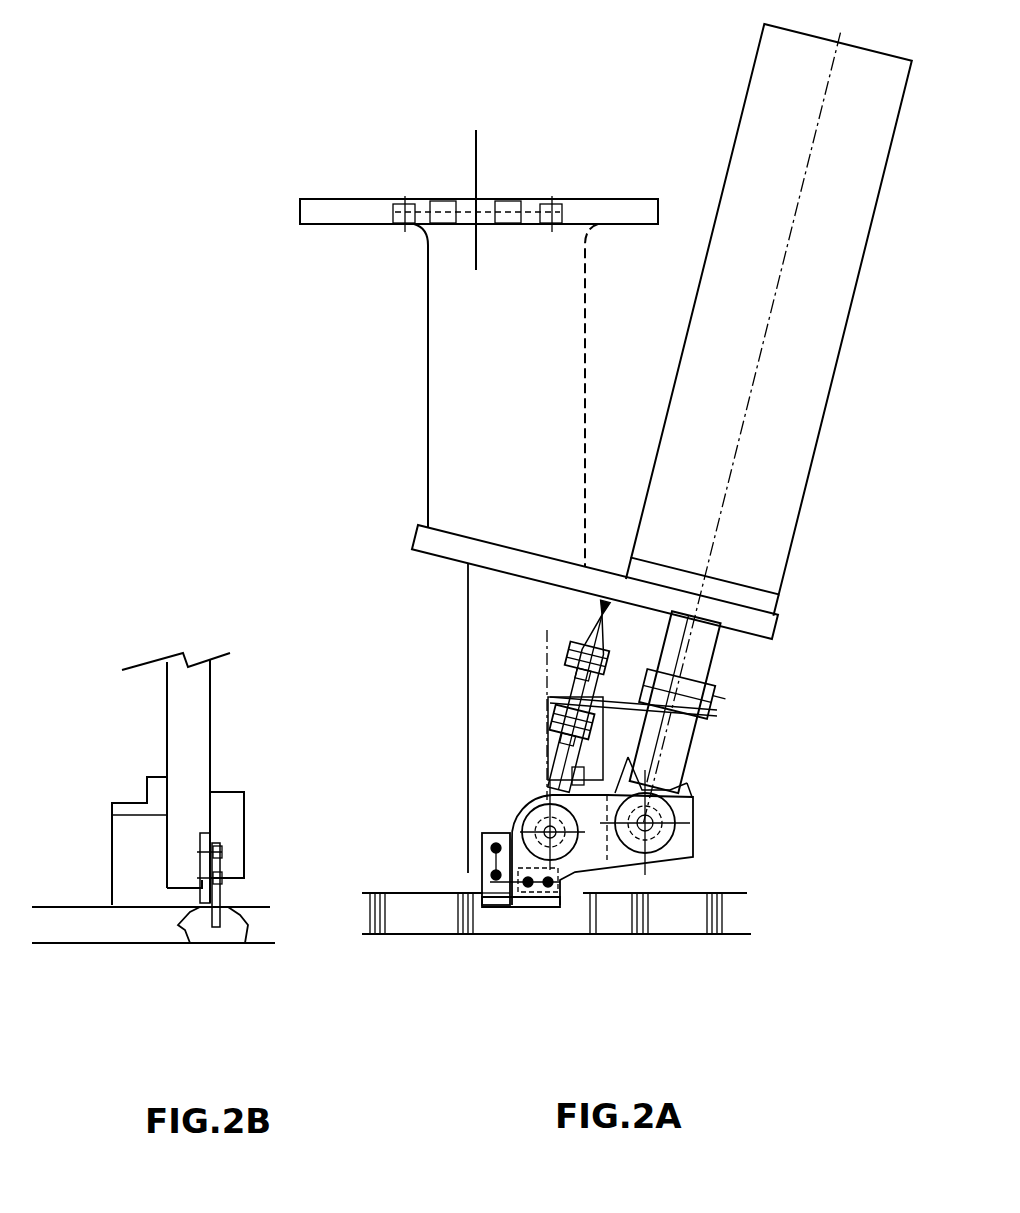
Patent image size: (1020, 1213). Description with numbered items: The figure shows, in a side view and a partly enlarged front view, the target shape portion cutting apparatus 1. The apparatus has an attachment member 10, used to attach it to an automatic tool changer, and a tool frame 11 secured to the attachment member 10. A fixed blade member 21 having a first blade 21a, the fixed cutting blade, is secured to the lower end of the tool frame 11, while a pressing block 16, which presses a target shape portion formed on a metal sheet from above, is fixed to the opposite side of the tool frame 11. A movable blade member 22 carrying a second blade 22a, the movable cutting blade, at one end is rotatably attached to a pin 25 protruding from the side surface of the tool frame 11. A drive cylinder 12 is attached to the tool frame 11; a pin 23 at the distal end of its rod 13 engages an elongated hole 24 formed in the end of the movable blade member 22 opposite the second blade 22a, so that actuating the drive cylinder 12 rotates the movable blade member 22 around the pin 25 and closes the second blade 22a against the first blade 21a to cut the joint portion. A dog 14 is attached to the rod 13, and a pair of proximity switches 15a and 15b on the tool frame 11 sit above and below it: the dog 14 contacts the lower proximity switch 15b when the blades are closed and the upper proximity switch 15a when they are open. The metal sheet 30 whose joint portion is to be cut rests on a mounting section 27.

In FIG. 2A, the target shape portion cutting apparatus 1 is at (370, 493).
In FIG. 2A, the attachment member 10 is at (366, 198).
In FIG. 2A, the tool frame 11 is at (427, 405).
In FIG. 2A, the drive cylinder 12 is at (802, 515).
In FIG. 2A, the rod 13 is at (705, 663).
In FIG. 2A, the dog 14 is at (620, 692).
In FIG. 2A, the upper proximity switch 15a is at (565, 668).
In FIG. 2A, the lower proximity switch 15b is at (553, 708).
In FIG. 2B, the pressing block 16 is at (112, 835).
In FIG. 2A, the fixed blade member 21 is at (482, 890).
In FIG. 2B, the fixed blade member 21 is at (215, 830).
In FIG. 2B, the first blade 21a is at (190, 935).
In FIG. 2A, the movable blade member 22 is at (517, 907).
In FIG. 2B, the movable blade member 22 is at (215, 930).
In FIG. 2B, the second blade 22a is at (248, 940).
In FIG. 2A, the pin 23 is at (690, 786).
In FIG. 2A, the elongated hole 24 is at (690, 833).
In FIG. 2A, the pin 25 is at (560, 860).
In FIG. 2A, the mounting section 27 is at (718, 917).
In FIG. 2A, the metal sheet 30 is at (715, 893).